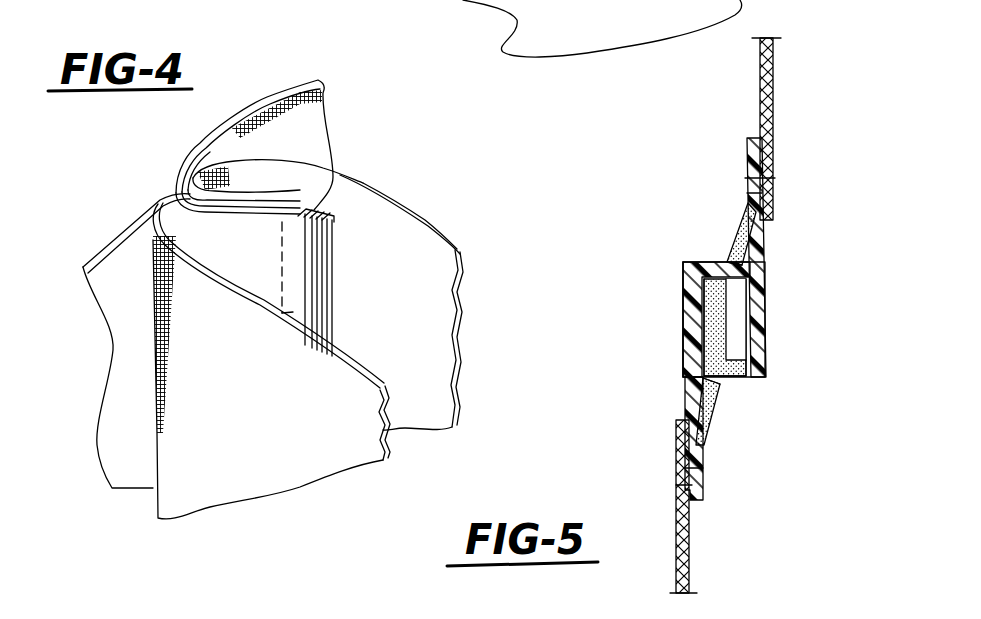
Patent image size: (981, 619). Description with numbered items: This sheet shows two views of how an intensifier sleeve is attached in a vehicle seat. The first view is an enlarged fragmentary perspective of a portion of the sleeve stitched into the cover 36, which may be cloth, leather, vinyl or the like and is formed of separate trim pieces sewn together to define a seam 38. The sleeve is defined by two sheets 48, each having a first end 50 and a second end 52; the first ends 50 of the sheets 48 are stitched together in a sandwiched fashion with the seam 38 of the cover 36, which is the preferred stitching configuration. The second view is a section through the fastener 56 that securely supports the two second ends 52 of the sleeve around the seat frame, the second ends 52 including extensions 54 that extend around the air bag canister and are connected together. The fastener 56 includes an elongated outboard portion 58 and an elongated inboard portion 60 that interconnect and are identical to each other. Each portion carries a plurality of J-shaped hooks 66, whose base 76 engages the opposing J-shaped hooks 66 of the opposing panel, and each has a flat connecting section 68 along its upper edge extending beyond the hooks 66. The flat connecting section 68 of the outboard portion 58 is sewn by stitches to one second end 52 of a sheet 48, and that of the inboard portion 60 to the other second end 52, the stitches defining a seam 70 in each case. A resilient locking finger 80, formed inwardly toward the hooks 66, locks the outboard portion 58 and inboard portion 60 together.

In FIG. 4, the cover 36 is at (112, 253).
In FIG. 4, the seam 38 is at (283, 215).
In FIG. 4, the sheet 48 is at (407, 367).
In FIG. 4, the first end 50 is at (282, 313).
In FIG. 5, the second end 52 is at (767, 220).
In FIG. 5, the extension 54 is at (773, 73).
In FIG. 5, the fastener 56 is at (622, 228).
In FIG. 5, the outboard portion 58 is at (687, 337).
In FIG. 5, the inboard portion 60 is at (767, 273).
In FIG. 5, the J-shaped hook 66 is at (713, 333).
In FIG. 5, the flat connecting section 68 is at (750, 193).
In FIG. 5, the seam 70 is at (780, 180).
In FIG. 5, the base 76 is at (710, 262).
In FIG. 5, the locking finger 80 is at (733, 233).